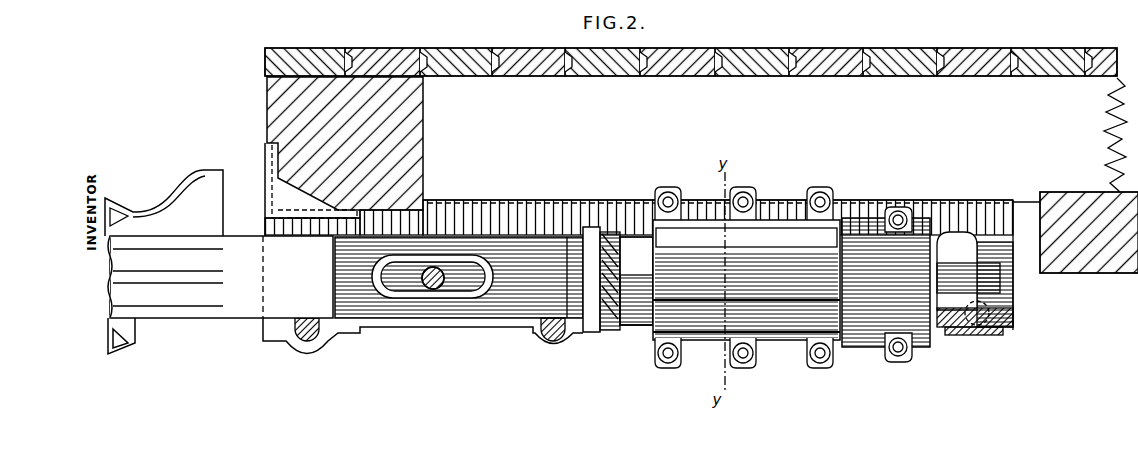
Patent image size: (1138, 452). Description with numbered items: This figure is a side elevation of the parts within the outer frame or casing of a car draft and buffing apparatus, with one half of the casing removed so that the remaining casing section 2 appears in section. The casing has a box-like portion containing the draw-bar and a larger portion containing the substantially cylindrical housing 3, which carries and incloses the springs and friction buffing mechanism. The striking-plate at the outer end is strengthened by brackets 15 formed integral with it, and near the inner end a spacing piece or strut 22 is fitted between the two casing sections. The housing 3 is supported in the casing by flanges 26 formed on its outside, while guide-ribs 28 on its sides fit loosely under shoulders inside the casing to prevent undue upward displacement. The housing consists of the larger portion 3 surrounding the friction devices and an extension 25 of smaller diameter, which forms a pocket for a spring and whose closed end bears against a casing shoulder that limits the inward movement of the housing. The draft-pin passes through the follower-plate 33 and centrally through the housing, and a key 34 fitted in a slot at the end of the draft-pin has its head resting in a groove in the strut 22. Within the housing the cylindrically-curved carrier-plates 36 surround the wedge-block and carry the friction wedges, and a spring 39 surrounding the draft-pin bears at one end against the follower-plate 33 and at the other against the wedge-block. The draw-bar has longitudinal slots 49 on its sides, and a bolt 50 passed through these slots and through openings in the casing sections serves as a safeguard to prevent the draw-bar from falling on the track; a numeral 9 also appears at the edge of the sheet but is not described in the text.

The casing section 2 is at (1015, 266).
The housing 3 is at (778, 218).
The shaft 9 is at (722, 7).
The bracket 15 is at (311, 189).
The strut 22 is at (980, 334).
The extension 25 is at (886, 284).
The flange 26 is at (792, 326).
The guide-rib 28 is at (746, 284).
The follower-plate 33 is at (590, 260).
The key 34 is at (975, 279).
The carrier-plate 36 is at (644, 276).
The spring 39 is at (607, 330).
The slot 49 is at (459, 277).
The bolt 50 is at (433, 266).